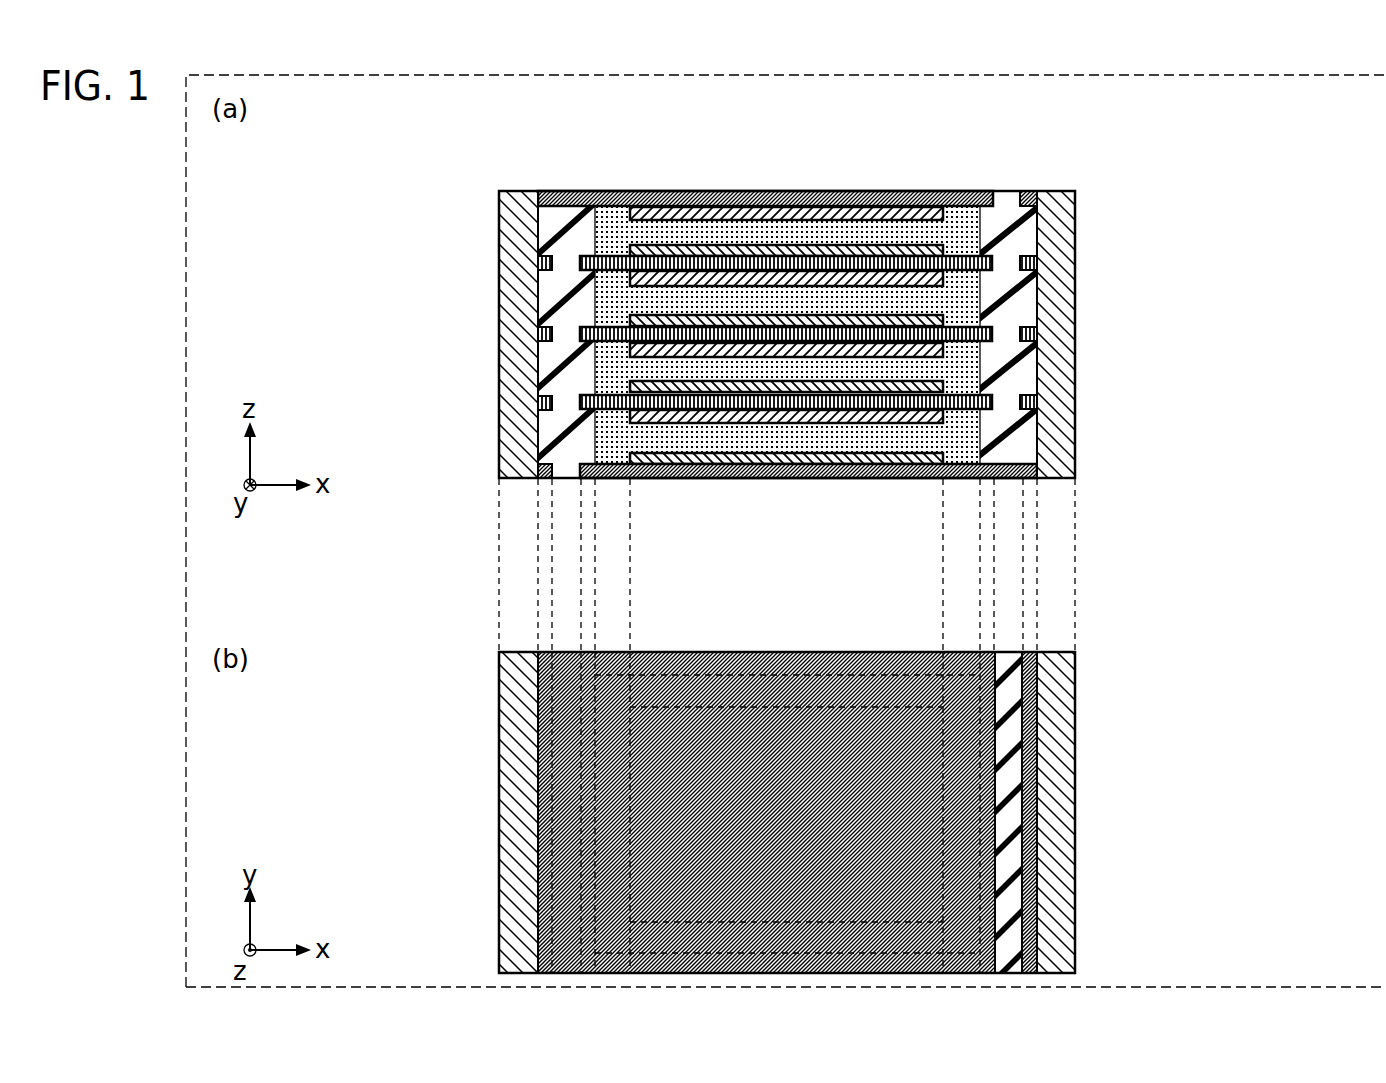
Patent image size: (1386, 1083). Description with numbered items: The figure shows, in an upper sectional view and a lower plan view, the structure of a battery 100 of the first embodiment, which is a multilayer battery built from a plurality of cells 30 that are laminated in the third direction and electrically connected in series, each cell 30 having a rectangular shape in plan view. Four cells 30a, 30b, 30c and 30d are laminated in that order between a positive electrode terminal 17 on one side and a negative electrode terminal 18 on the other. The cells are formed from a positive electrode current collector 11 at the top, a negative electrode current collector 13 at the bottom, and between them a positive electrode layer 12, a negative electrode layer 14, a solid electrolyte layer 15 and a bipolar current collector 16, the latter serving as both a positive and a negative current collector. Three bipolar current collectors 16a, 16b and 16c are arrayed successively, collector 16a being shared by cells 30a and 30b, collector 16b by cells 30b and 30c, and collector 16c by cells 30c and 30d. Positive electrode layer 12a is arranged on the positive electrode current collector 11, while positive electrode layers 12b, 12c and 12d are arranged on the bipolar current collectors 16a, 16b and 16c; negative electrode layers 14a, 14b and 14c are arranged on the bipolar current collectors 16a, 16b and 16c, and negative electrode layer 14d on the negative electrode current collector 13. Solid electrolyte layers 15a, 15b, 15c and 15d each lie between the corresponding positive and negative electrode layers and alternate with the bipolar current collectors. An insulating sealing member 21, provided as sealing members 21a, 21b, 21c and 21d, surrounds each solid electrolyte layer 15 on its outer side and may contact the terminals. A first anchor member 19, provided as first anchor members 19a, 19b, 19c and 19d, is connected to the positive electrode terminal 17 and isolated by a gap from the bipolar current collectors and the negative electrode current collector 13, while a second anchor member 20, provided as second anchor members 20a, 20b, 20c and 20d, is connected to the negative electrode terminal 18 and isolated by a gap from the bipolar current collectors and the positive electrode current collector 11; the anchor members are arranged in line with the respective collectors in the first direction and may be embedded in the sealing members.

The battery 100 is at (594, 142).
The positive electrode current collector 11 is at (995, 199).
The positive electrode layer 12 is at (950, 320).
The positive electrode layer 12a is at (945, 213).
The positive electrode layer 12b is at (945, 278).
The positive electrode layer 12c is at (945, 350).
The positive electrode layer 12d is at (945, 416).
The negative electrode current collector 13 is at (1000, 471).
The negative electrode layer 14 is at (950, 377).
The negative electrode layer 14a is at (945, 250).
The negative electrode layer 14b is at (945, 320).
The negative electrode layer 14c is at (945, 386).
The negative electrode layer 14d is at (945, 458).
The solid electrolyte layer 15 is at (932, 349).
The solid electrolyte layer 15a is at (968, 233).
The solid electrolyte layer 15b is at (968, 301).
The solid electrolyte layer 15c is at (968, 369).
The solid electrolyte layer 15d is at (968, 438).
The bipolar current collector 16 is at (925, 347).
The bipolar current collector 16a is at (995, 263).
The bipolar current collector 16b is at (995, 334).
The bipolar current collector 16c is at (995, 402).
The positive electrode terminal 17 is at (521, 190).
The negative electrode terminal 18 is at (1053, 202).
The first anchor member 19 is at (454, 353).
The first anchor member 19a is at (541, 259).
The first anchor member 19b is at (541, 330).
The first anchor member 19c is at (541, 398).
The first anchor member 19d is at (541, 467).
The second anchor member 20 is at (1064, 550).
The second anchor member 20a is at (1033, 191).
The second anchor member 20b is at (1030, 262).
The second anchor member 20c is at (1030, 332).
The second anchor member 20d is at (1030, 402).
The sealing member 21 is at (644, 339).
The sealing member 21a is at (560, 232).
The sealing member 21b is at (560, 303).
The sealing member 21c is at (560, 370).
The sealing member 21d is at (562, 440).
The cell 30 is at (976, 349).
The cell 30a is at (1273, 103).
The cell 30b is at (1273, 230).
The cell 30c is at (1273, 350).
The cell 30d is at (1273, 470).